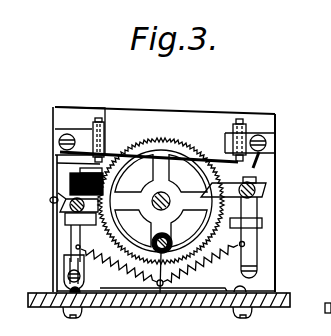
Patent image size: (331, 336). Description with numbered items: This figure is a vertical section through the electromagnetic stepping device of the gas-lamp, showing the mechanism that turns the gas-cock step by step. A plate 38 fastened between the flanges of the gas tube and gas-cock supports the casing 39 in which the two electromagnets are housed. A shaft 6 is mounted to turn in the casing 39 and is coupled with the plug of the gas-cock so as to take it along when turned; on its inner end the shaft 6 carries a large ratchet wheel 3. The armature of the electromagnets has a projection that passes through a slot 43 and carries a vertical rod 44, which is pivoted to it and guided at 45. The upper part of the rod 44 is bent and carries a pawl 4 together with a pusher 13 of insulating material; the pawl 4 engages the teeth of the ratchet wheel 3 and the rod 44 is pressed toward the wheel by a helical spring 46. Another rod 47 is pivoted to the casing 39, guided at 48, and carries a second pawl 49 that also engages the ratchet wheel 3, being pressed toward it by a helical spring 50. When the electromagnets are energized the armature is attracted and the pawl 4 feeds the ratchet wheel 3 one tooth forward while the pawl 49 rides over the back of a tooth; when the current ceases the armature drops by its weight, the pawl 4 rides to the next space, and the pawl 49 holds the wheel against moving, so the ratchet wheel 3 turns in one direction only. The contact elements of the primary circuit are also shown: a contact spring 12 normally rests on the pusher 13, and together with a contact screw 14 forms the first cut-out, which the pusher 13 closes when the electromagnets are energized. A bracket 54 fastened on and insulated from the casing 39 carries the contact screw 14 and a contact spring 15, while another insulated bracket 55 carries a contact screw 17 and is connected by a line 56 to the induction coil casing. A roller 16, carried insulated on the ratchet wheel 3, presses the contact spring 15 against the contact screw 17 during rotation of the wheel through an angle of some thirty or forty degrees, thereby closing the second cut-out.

The ratchet wheel 3 is at (190, 153).
The pawl 4 is at (60, 211).
The shaft 6 is at (168, 200).
The contact spring 12 is at (57, 163).
The pusher 13 is at (70, 183).
The contact screw 14 is at (99, 119).
The contact spring 15 is at (163, 120).
The roller 16 is at (159, 298).
The contact screw 17 is at (246, 121).
The plate 38 is at (53, 300).
The casing 39 is at (272, 212).
The slot 43 is at (65, 268).
The rod 44 is at (72, 243).
The guide 45 is at (75, 222).
The helical spring 46 is at (119, 264).
The rod 47 is at (258, 260).
The guide 48 is at (261, 225).
The pawl 49 is at (268, 188).
The helical spring 50 is at (199, 262).
The bracket 54 is at (80, 135).
The bracket 55 is at (275, 139).
The line 56 is at (260, 160).